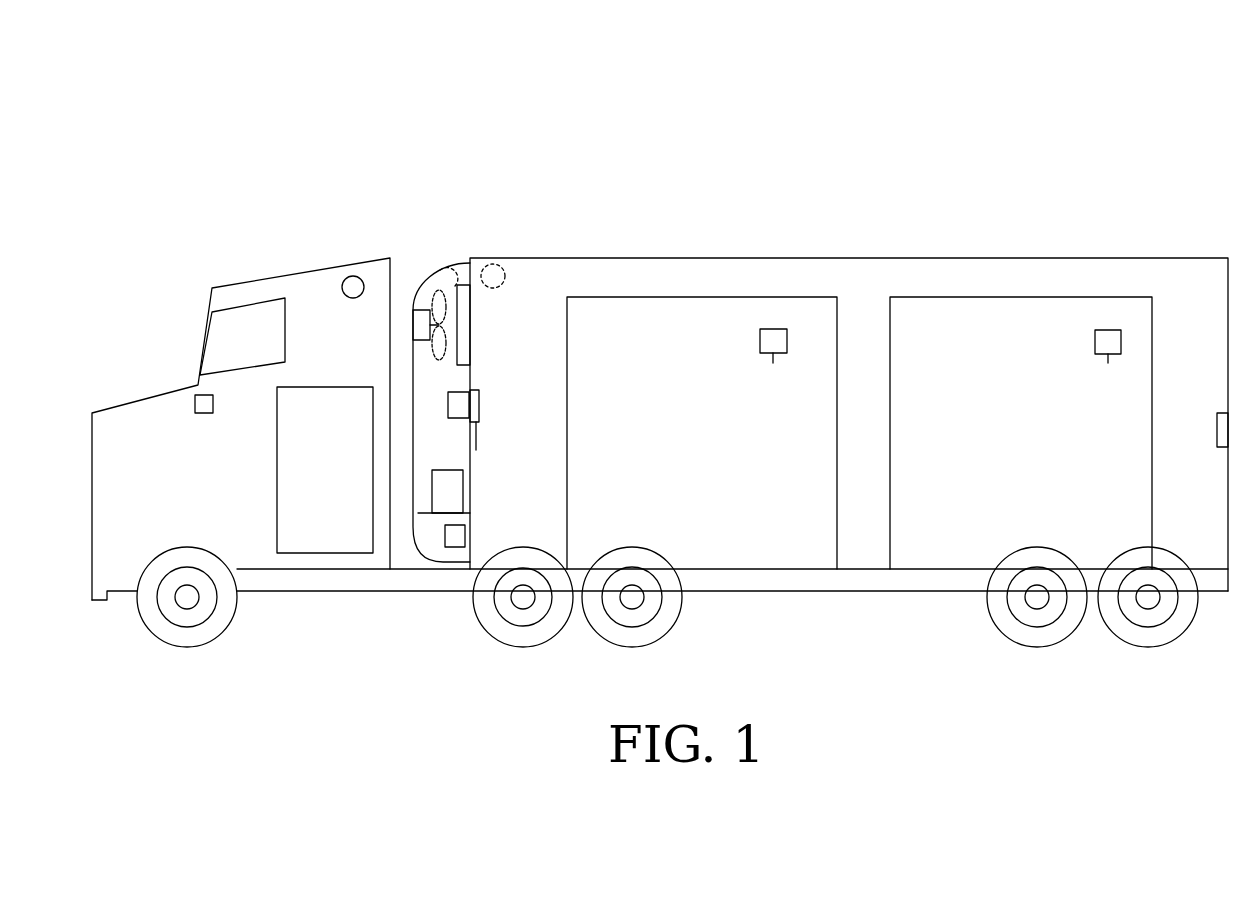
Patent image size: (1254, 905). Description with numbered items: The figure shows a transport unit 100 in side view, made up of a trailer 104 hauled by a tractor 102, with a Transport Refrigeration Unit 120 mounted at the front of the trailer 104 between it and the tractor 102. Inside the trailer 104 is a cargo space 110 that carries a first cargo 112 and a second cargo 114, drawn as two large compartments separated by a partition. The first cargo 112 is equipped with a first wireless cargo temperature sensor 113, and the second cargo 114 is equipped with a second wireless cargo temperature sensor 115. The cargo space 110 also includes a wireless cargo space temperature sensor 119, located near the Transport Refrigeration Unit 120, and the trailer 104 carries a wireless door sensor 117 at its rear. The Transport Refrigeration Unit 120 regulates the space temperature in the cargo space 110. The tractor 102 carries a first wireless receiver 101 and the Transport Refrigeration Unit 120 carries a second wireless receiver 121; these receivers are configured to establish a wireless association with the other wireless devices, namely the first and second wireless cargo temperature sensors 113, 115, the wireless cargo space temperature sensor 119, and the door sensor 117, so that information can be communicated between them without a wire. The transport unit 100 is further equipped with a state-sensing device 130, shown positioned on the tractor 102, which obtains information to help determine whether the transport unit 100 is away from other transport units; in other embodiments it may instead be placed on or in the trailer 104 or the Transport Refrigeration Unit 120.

The transport unit 100 is at (1165, 109).
The first wireless receiver 101 is at (203, 414).
The tractor 102 is at (272, 276).
The trailer 104 is at (969, 258).
The cargo space 110 is at (863, 297).
The first cargo 112 is at (685, 297).
The first wireless cargo temperature sensor 113 is at (760, 342).
The second cargo 114 is at (1048, 297).
The second wireless cargo temperature sensor 115 is at (1095, 342).
The wireless door sensor 117 is at (1215, 428).
The wireless cargo space temperature sensor 119 is at (480, 405).
The Transport Refrigeration Unit 120 is at (430, 267).
The second wireless receiver 121 is at (448, 405).
The state-sensing device 130 is at (353, 276).